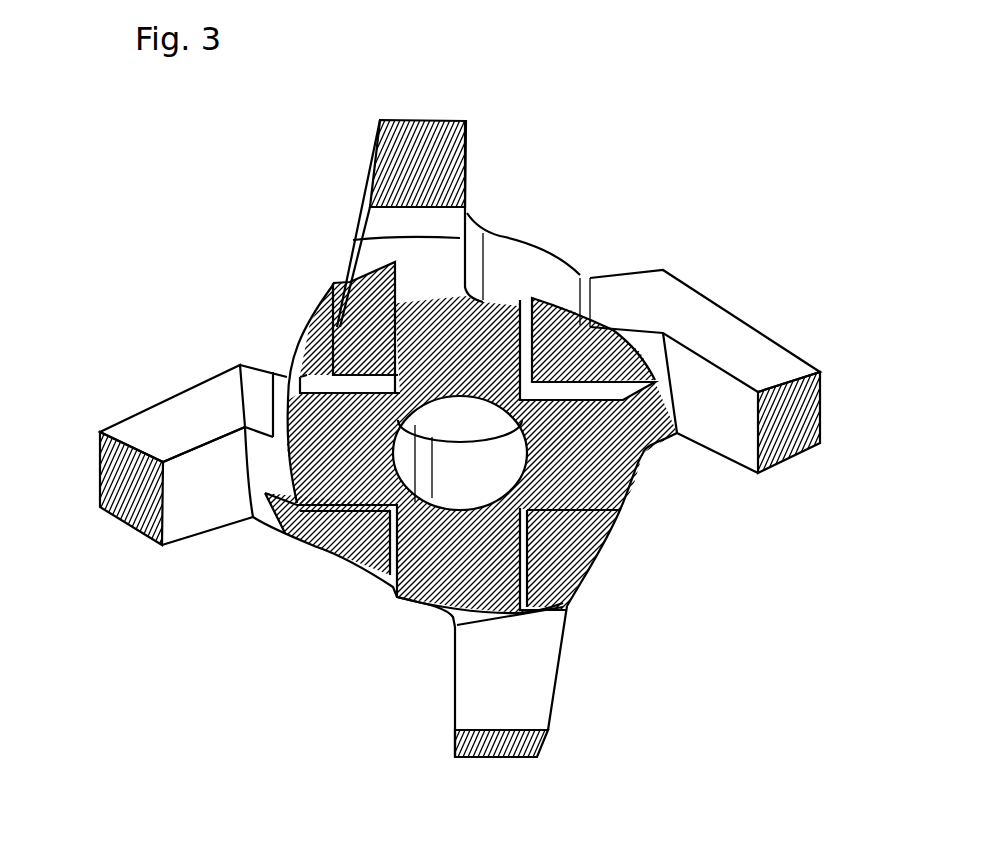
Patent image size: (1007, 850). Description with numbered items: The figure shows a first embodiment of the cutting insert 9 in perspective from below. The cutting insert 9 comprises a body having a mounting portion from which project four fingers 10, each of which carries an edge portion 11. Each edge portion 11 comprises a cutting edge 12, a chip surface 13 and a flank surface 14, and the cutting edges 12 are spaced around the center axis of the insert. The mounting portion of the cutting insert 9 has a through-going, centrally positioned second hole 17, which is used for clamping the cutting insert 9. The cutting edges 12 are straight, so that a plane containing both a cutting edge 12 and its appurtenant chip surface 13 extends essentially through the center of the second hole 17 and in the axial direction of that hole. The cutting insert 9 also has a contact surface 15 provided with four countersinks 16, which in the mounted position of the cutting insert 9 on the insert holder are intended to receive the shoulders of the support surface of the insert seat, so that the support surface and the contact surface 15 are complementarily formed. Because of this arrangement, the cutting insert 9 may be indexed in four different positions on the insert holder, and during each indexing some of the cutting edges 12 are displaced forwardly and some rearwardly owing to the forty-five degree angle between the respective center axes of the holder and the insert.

The cutting insert 9 is at (592, 233).
The finger 10 is at (365, 152).
The edge portion 11 is at (480, 177).
The cutting edge 12 is at (467, 140).
The chip surface 13 is at (168, 420).
The flank surface 14 is at (423, 132).
The contact surface 15 is at (350, 483).
The countersink 16 is at (343, 350).
The second hole 17 is at (473, 417).